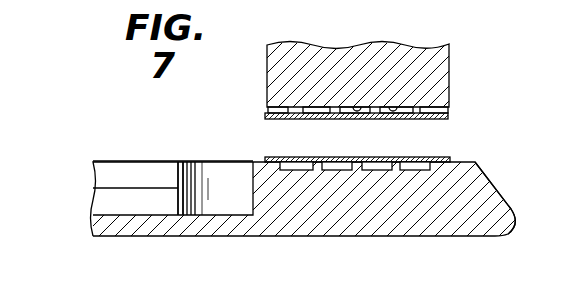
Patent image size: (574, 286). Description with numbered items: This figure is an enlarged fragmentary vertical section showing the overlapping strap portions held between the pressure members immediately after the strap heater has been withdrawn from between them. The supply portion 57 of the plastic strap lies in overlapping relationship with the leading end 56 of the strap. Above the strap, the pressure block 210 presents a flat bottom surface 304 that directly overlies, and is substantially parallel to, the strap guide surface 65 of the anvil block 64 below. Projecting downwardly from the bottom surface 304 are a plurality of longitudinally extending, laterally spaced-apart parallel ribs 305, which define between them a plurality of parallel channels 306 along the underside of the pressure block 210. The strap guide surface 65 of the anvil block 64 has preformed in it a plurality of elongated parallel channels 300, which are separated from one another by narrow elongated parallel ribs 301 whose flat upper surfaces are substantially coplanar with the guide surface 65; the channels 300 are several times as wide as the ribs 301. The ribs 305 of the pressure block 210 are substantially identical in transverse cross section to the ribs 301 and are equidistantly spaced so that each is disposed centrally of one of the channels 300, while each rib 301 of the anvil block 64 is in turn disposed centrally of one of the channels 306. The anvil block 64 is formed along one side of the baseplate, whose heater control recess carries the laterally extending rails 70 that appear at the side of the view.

The pressure block 210 is at (450, 58).
The flat bottom surface 304 is at (265, 108).
The ribs 305 is at (326, 113).
The channels 306 is at (393, 107).
The supply portion of the strap 57 is at (450, 117).
The leading end of the strap 56 is at (272, 155).
The channels 300 is at (417, 160).
The ribs 301 is at (343, 165).
The anvil block 64 is at (358, 222).
The strap guide surface 65 is at (462, 162).
The rails 70 is at (98, 186).